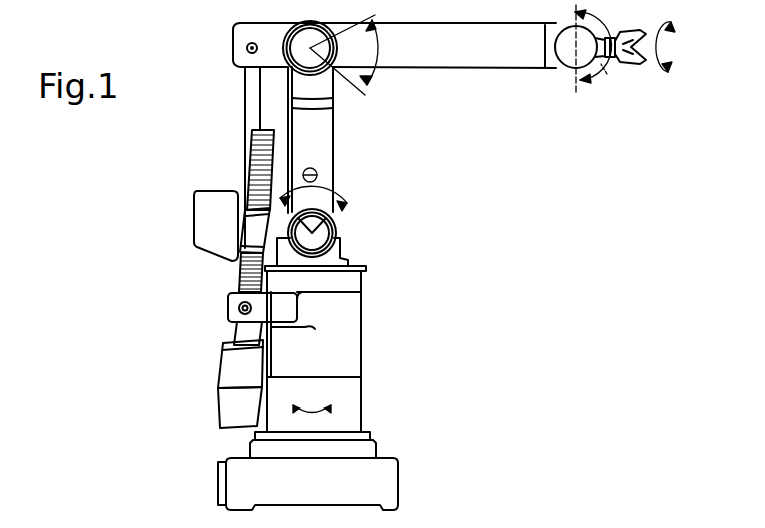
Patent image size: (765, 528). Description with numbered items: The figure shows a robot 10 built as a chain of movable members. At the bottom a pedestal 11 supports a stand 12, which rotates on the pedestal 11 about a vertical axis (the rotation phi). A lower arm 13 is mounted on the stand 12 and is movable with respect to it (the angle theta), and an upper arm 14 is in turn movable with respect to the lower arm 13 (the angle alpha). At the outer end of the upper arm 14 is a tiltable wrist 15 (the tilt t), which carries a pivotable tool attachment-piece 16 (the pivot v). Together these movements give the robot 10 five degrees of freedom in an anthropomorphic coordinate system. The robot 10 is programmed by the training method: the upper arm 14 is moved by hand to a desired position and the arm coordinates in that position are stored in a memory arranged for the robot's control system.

The robot 10 is at (198, 166).
The pedestal 11 is at (238, 483).
The stand 12 is at (352, 331).
The lower arm 13 is at (330, 133).
The upper arm 14 is at (451, 58).
The wrist 15 is at (570, 60).
The tool attachment-piece 16 is at (638, 60).